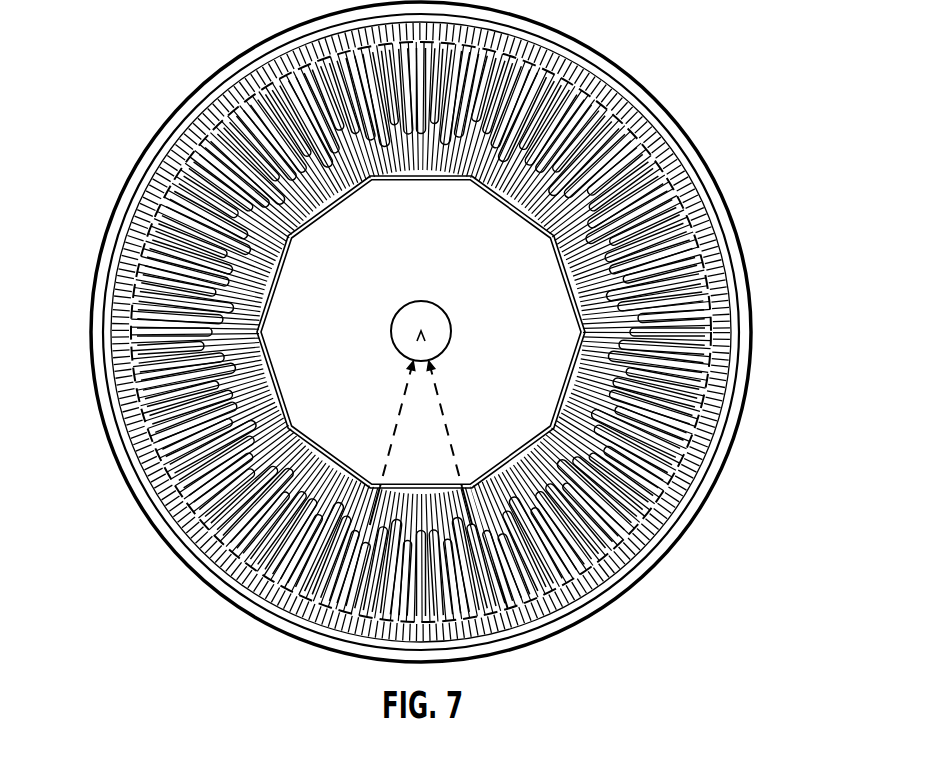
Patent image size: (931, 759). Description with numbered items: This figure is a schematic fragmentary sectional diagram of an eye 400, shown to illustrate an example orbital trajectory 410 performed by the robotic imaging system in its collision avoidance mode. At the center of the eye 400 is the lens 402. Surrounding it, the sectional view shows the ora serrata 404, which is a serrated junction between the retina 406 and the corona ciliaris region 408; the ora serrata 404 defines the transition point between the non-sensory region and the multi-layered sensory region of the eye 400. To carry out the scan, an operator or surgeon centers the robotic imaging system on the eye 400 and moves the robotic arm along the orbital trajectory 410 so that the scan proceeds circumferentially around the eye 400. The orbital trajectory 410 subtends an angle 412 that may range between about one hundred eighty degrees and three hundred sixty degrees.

The eye 400 is at (137, 610).
The lens 402 is at (341, 329).
The ora serrata 404 is at (728, 312).
The retina 406 is at (195, 142).
The corona ciliaris region 408 is at (130, 283).
The orbital trajectory 410 is at (645, 125).
The angle 412 is at (448, 315).